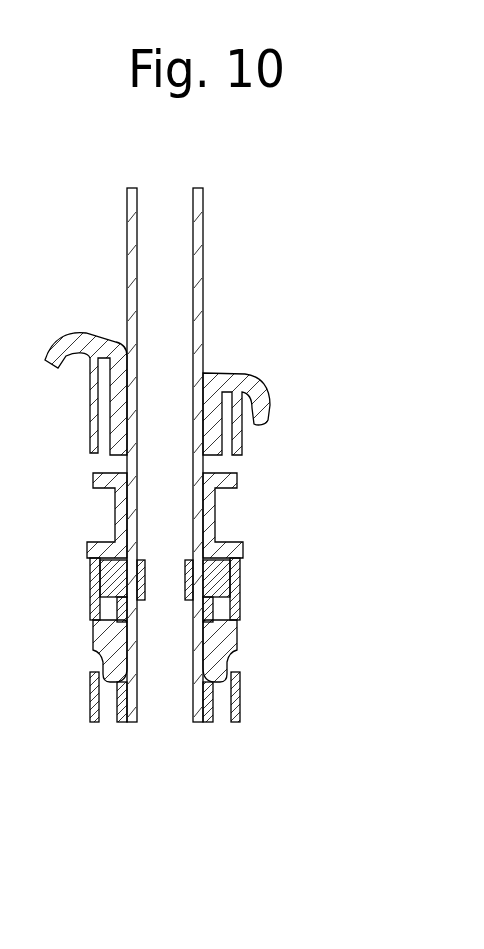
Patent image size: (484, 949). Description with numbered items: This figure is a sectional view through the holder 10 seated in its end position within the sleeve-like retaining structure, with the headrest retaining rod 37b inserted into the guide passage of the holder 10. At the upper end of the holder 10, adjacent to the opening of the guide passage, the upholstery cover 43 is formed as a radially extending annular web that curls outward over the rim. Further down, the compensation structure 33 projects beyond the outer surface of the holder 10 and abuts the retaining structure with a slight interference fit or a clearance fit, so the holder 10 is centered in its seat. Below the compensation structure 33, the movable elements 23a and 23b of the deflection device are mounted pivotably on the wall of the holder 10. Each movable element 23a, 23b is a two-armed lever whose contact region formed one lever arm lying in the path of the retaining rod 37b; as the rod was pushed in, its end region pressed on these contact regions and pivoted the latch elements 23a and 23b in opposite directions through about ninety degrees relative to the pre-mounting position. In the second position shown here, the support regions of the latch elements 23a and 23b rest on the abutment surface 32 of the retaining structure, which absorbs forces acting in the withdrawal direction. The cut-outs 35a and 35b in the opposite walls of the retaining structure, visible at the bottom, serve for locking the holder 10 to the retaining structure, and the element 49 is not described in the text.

The holder 10 is at (286, 380).
The retaining rod 37b is at (203, 236).
The upholstery cover 43 is at (78, 345).
The compensation structure 33 is at (101, 580).
The abutment surface 32 is at (93, 635).
The second support wall 49 is at (236, 612).
The movable element 23a is at (93, 652).
The movable element 23b is at (232, 637).
The cut-out 35a is at (93, 662).
The cut-out 35b is at (240, 664).